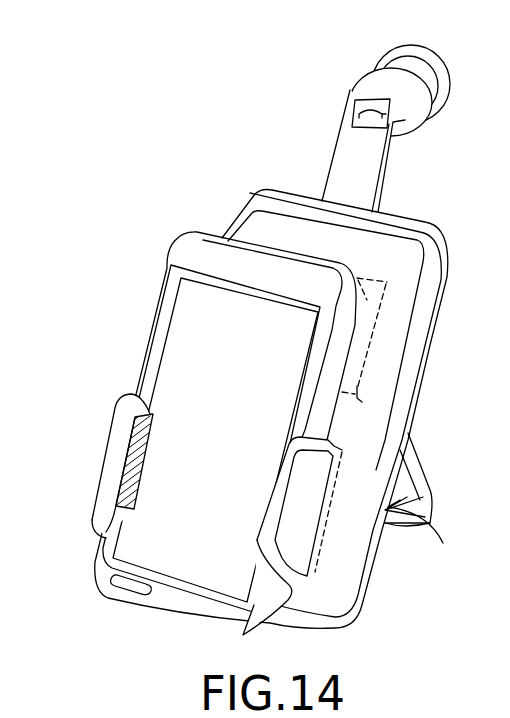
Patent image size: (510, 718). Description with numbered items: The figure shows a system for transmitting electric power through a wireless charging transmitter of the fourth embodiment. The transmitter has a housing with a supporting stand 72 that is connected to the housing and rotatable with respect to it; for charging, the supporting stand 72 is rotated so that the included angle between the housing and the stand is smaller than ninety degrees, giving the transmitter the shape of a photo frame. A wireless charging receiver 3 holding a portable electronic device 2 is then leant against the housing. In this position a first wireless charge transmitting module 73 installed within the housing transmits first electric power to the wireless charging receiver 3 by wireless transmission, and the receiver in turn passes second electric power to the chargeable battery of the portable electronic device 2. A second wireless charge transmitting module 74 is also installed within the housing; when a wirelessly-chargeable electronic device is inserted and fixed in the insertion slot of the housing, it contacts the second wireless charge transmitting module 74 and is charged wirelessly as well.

The portable electronic device 2 is at (206, 250).
The wireless charging receiver 3 is at (118, 448).
The supporting stand 72 is at (394, 325).
The first wireless charge transmitting module 73 is at (320, 520).
The second wireless charge transmitting module 74 is at (372, 295).